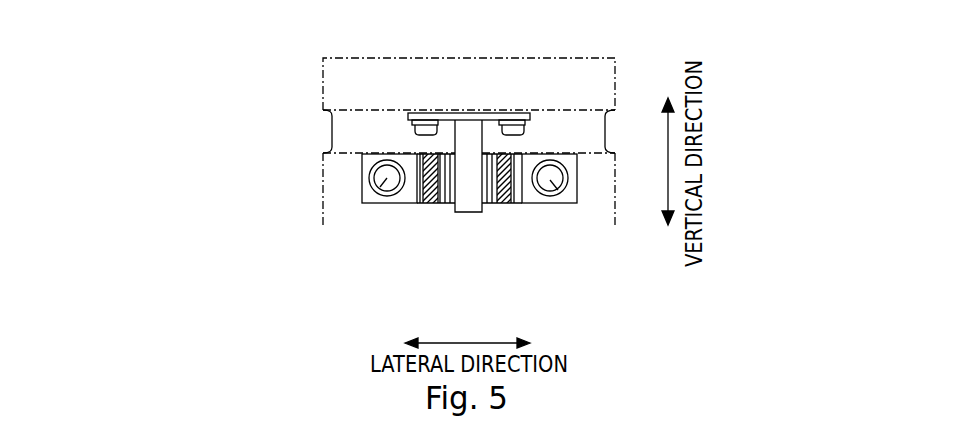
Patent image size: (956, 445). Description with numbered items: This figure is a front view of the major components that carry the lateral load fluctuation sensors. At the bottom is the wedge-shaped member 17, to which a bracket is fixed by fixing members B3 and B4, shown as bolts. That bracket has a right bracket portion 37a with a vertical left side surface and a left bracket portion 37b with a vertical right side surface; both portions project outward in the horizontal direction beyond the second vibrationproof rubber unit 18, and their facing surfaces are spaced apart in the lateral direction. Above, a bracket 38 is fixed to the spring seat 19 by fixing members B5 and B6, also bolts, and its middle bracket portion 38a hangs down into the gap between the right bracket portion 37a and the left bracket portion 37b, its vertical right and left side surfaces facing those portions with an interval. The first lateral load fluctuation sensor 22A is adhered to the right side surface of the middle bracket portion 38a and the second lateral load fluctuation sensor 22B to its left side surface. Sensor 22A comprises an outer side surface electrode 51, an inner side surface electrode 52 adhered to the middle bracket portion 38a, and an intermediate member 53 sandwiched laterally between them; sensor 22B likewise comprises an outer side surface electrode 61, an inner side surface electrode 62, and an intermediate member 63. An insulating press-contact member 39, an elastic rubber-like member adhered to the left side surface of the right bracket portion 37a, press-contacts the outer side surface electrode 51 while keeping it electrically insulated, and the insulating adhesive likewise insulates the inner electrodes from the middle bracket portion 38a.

The wedge-shaped member 17 is at (322, 197).
The second vibrationproof rubber unit 18 is at (330, 132).
The spring seat 19 is at (322, 90).
The first lateral load fluctuation sensor 22A is at (421, 243).
The second lateral load fluctuation sensor 22B is at (513, 241).
The right bracket portion 37a is at (417, 204).
The left bracket portion 37b is at (520, 204).
The bracket 38 is at (527, 117).
The middle bracket portion 38a is at (457, 137).
The press-contact member 39 is at (505, 204).
The outer side surface electrode 51 is at (440, 204).
The inner side surface electrode 52 is at (452, 204).
The intermediate member 53 is at (445, 204).
The outer side surface electrode 61 is at (494, 204).
The inner side surface electrode 62 is at (484, 204).
The intermediate member 63 is at (489, 204).
The fixing member B3 is at (373, 203).
The fixing member B4 is at (563, 203).
The fixing member B5 is at (413, 135).
The fixing member B6 is at (523, 135).